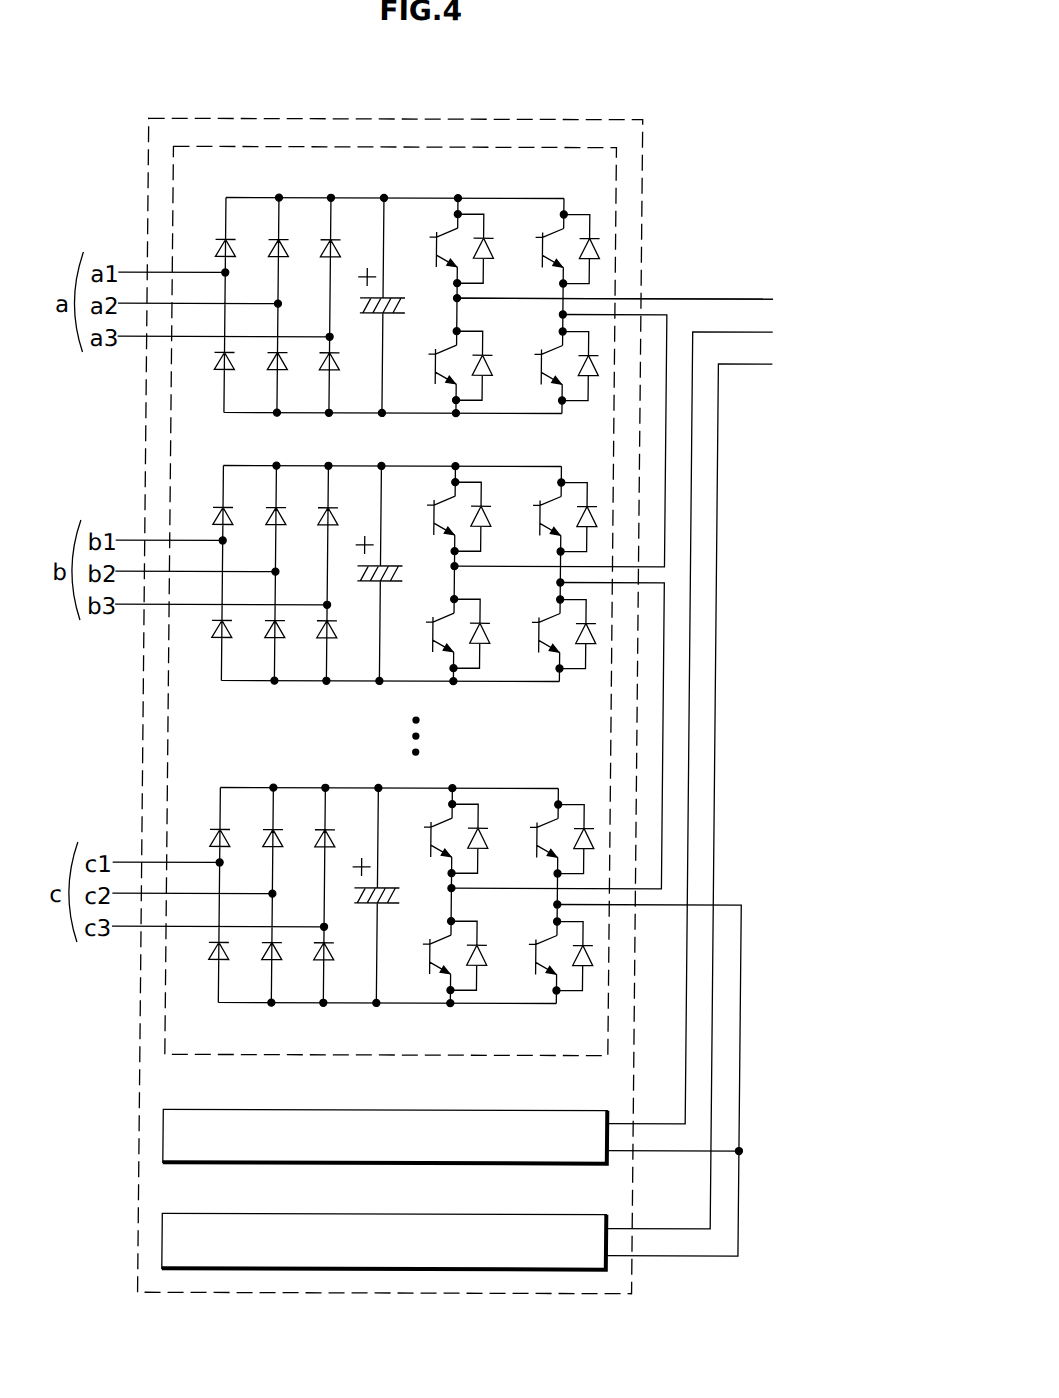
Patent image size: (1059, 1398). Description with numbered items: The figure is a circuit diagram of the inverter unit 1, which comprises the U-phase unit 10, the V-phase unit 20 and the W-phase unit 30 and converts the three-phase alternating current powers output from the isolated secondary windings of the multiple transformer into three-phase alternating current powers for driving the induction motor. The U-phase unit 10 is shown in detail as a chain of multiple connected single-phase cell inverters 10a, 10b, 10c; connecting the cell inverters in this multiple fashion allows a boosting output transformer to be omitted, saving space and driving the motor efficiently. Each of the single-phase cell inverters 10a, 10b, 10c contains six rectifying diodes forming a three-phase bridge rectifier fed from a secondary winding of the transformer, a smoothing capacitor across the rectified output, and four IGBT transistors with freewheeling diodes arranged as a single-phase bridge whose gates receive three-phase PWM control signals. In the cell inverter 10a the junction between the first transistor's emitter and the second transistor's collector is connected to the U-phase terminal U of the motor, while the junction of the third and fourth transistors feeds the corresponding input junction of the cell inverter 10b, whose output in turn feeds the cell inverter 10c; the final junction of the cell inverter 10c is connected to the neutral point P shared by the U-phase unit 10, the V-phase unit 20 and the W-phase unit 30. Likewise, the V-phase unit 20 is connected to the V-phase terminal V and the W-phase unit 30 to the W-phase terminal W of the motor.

The inverter unit 1 is at (368, 118).
The U-phase unit 10 is at (619, 170).
The single-phase cell inverter 10a is at (504, 183).
The single-phase cell inverter 10b is at (504, 451).
The single-phase cell inverter 10c is at (504, 773).
The V-phase unit 20 is at (520, 1110).
The W-phase unit 30 is at (520, 1215).
The U-phase terminal U is at (626, 300).
The V-phase terminal V is at (700, 722).
The W-phase terminal W is at (703, 791).
The neutral point P is at (686, 1151).